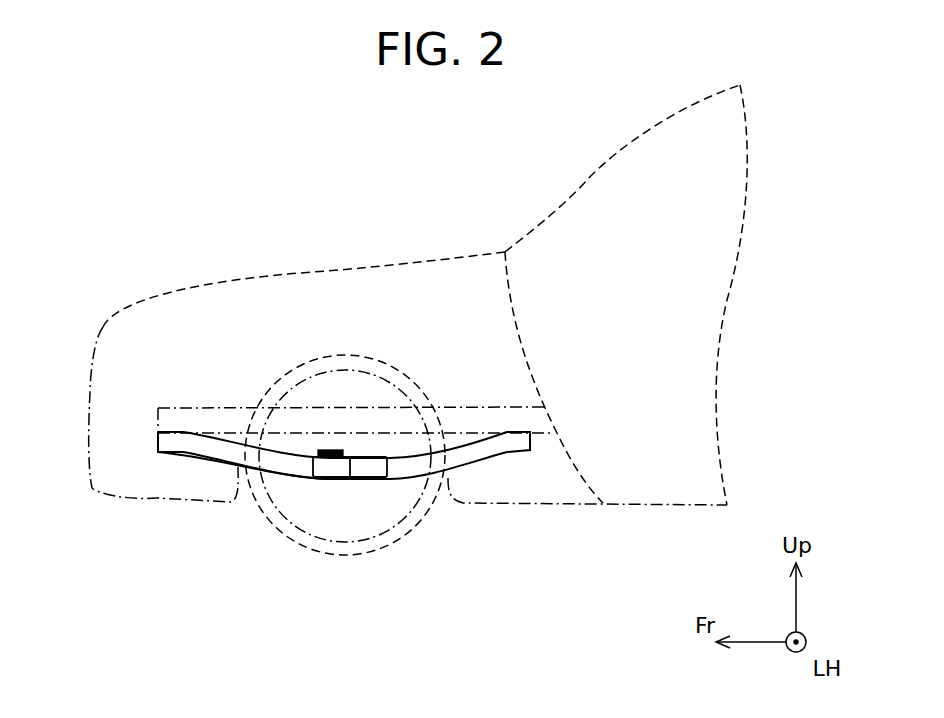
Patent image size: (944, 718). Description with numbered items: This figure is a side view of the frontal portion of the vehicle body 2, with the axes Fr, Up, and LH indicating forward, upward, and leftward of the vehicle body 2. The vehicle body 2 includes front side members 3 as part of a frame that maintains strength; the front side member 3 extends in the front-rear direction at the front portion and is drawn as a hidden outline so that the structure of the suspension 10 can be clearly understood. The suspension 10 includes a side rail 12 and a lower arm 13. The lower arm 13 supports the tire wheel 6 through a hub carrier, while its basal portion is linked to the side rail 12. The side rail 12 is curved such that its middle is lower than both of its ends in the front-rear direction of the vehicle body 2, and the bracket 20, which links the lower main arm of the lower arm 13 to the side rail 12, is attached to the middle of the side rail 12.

The vehicle body 2 is at (453, 258).
The front side member 3 is at (160, 420).
The tire wheel 6 is at (387, 525).
The suspension 10 is at (492, 473).
The side rail 12 is at (188, 454).
The lower arm 13 is at (322, 477).
The bracket 20 is at (330, 450).